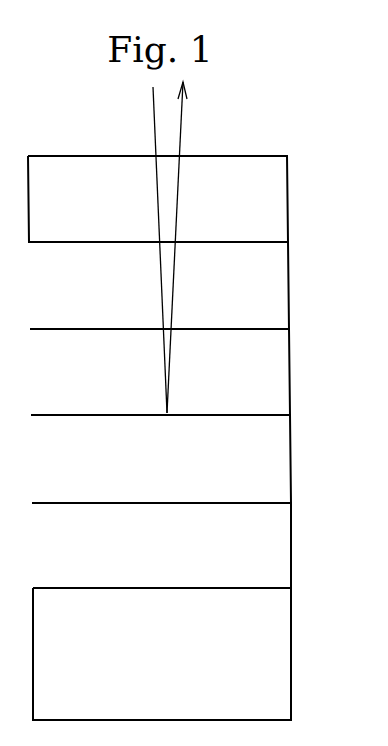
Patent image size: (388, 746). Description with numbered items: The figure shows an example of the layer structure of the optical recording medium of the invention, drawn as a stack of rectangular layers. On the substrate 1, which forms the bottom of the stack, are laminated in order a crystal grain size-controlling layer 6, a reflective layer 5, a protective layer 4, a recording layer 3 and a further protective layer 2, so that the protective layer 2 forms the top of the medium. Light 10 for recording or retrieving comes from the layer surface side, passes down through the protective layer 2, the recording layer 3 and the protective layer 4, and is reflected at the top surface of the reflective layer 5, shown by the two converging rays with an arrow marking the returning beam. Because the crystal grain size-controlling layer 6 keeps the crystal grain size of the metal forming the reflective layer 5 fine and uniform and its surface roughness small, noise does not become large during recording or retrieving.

The substrate 1 is at (282, 655).
The protective layer 2 is at (283, 208).
The recording layer 3 is at (281, 292).
The protective layer 4 is at (281, 372).
The reflective layer 5 is at (283, 467).
The crystal grain size-controlling layer 6 is at (286, 548).
The light 10 is at (155, 118).